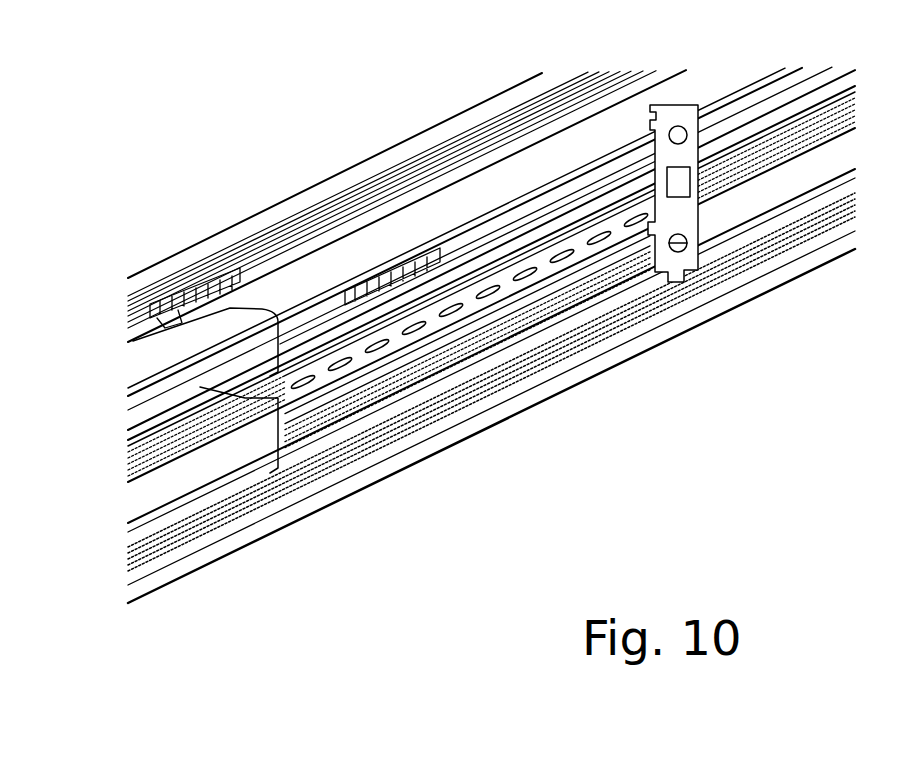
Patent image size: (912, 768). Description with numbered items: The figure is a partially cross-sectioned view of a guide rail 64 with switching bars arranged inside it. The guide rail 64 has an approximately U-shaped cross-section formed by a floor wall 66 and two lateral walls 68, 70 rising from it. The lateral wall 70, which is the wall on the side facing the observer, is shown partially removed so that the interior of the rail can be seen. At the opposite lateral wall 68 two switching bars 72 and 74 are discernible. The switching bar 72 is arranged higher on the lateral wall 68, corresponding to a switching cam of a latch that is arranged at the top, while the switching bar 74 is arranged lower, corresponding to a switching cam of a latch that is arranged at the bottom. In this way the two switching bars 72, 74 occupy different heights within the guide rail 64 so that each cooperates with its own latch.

The guide rail 64 is at (578, 368).
The floor wall 66 is at (405, 358).
The lateral wall 68 is at (450, 135).
The lateral wall 70 is at (222, 455).
The switching bar 72 is at (178, 300).
The switching bar 74 is at (372, 287).